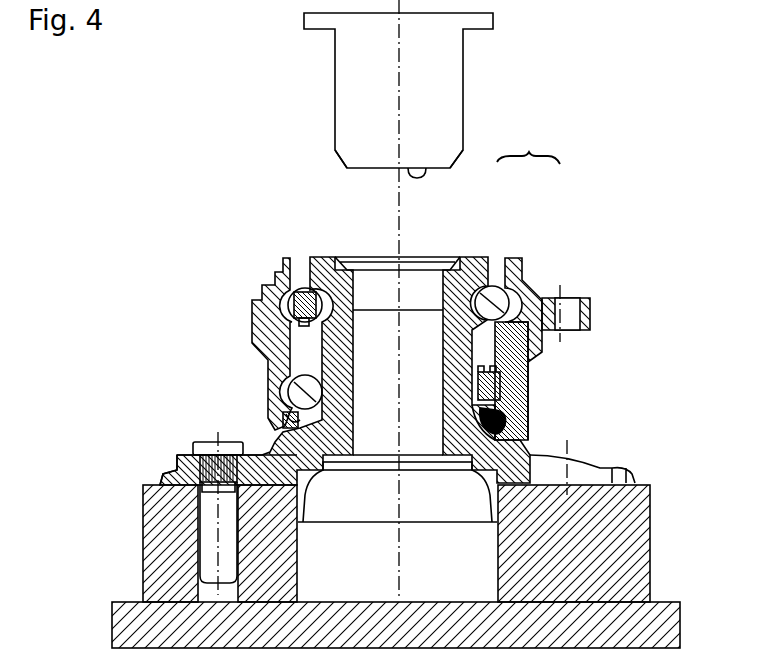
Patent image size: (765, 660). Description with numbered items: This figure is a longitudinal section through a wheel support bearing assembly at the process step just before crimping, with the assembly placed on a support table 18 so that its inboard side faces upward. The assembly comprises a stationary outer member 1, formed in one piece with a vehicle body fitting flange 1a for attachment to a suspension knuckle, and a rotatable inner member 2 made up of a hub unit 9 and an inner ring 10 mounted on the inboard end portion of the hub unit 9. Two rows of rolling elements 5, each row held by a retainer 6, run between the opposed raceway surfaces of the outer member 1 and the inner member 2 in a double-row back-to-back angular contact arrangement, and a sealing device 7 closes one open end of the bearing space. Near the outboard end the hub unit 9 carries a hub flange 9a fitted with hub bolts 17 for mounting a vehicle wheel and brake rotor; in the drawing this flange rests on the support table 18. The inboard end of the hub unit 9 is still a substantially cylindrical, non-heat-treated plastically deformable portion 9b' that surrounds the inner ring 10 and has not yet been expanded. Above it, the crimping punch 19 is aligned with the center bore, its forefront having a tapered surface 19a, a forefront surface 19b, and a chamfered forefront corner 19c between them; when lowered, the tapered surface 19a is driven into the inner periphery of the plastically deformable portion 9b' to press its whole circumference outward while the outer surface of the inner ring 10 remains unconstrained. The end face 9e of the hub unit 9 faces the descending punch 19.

The outer member 1 is at (252, 315).
The vehicle body fitting flange 1a is at (590, 312).
The inner member 2 is at (528, 146).
The rolling elements 5 is at (498, 300).
The retainer 6 is at (305, 292).
The sealing device 7 is at (284, 420).
The hub unit 9 is at (462, 262).
The hub flange 9a is at (160, 462).
The plastically deformable portion 9b' is at (337, 311).
The end face of hub wheel 9e is at (422, 265).
The inner ring 10 is at (483, 292).
The hub bolts 17 is at (206, 443).
The support table 18 is at (156, 528).
The crimping punch 19 is at (334, 96).
The tapered surface 19a is at (334, 164).
The forefront surface 19b is at (448, 162).
The forefront corner 19c is at (344, 172).